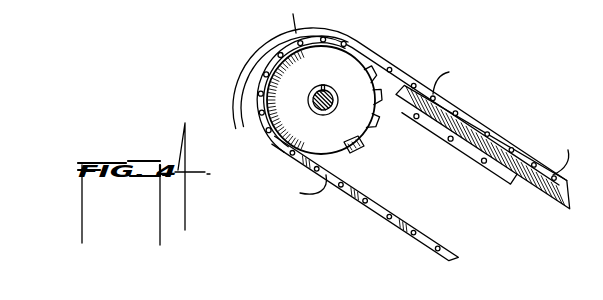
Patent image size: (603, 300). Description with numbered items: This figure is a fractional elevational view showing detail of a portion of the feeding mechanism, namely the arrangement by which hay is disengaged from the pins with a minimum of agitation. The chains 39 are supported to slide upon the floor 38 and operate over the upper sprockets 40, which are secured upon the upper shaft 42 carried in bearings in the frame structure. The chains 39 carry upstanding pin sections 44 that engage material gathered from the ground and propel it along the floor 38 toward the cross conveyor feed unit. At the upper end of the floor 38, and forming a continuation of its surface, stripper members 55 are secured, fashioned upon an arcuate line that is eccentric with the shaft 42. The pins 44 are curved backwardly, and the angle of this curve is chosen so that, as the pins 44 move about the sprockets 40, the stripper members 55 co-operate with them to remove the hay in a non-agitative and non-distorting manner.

The stripper members 55 is at (303, 34).
The upper shaft 42 is at (330, 93).
The upper sprockets 40 is at (344, 146).
The floor 38 is at (443, 130).
The chains 39 is at (425, 237).
The pin sections 44 is at (449, 72).